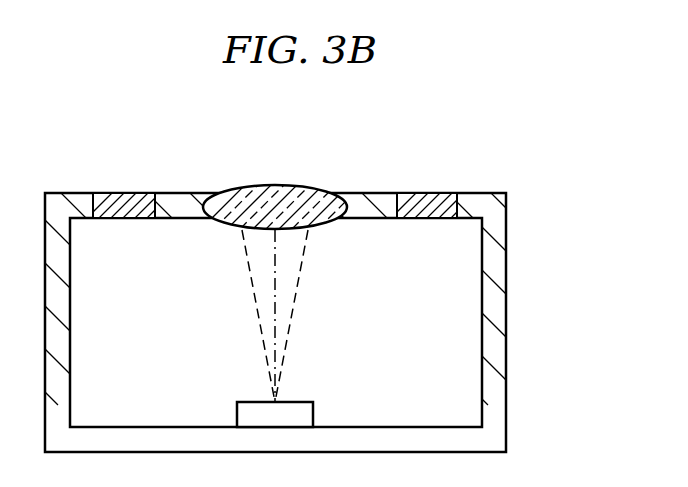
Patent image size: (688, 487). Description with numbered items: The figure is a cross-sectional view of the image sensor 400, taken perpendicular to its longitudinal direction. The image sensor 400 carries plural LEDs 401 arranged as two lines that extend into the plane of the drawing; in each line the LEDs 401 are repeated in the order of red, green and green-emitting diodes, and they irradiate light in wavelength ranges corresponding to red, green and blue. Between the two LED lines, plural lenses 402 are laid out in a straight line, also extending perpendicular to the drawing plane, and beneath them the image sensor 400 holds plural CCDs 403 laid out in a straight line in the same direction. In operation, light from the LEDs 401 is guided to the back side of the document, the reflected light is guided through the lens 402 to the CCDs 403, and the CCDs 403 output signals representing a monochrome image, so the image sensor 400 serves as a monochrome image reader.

The image sensor 400 is at (500, 233).
The LEDs 401 is at (120, 193).
The lens 402 is at (292, 184).
The CCDs 403 is at (307, 402).